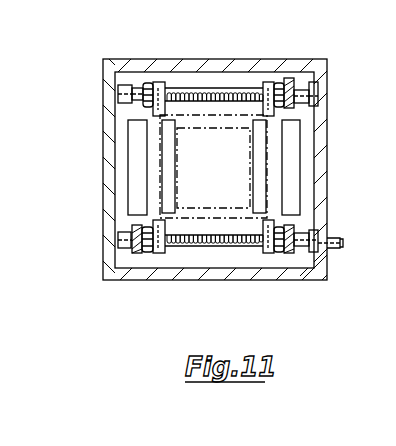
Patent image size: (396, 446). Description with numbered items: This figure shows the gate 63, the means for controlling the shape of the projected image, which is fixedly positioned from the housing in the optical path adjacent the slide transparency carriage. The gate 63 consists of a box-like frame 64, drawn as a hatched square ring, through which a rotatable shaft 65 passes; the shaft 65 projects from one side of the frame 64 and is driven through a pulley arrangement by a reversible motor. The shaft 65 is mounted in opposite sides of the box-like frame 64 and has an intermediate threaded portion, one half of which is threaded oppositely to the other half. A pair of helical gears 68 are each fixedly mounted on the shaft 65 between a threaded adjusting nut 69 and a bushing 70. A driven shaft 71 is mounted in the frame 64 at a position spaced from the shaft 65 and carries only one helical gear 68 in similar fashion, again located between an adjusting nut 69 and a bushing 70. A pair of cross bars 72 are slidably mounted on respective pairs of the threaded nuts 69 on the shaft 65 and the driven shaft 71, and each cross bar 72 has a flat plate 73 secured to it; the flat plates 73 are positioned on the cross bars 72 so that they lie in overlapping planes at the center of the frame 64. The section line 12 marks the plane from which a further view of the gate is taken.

The gate 63 is at (86, 143).
The box-like frame 64 is at (106, 178).
The rotatable shaft 65 is at (332, 243).
The helical gear 68 is at (289, 79).
The threaded adjusting nut 69 is at (150, 83).
The bushing 70 is at (317, 89).
The driven shaft 71 is at (239, 87).
The cross bar 72 is at (300, 118).
The flat plate 73 is at (172, 165).
The section line 12- 12 is at (236, 15).